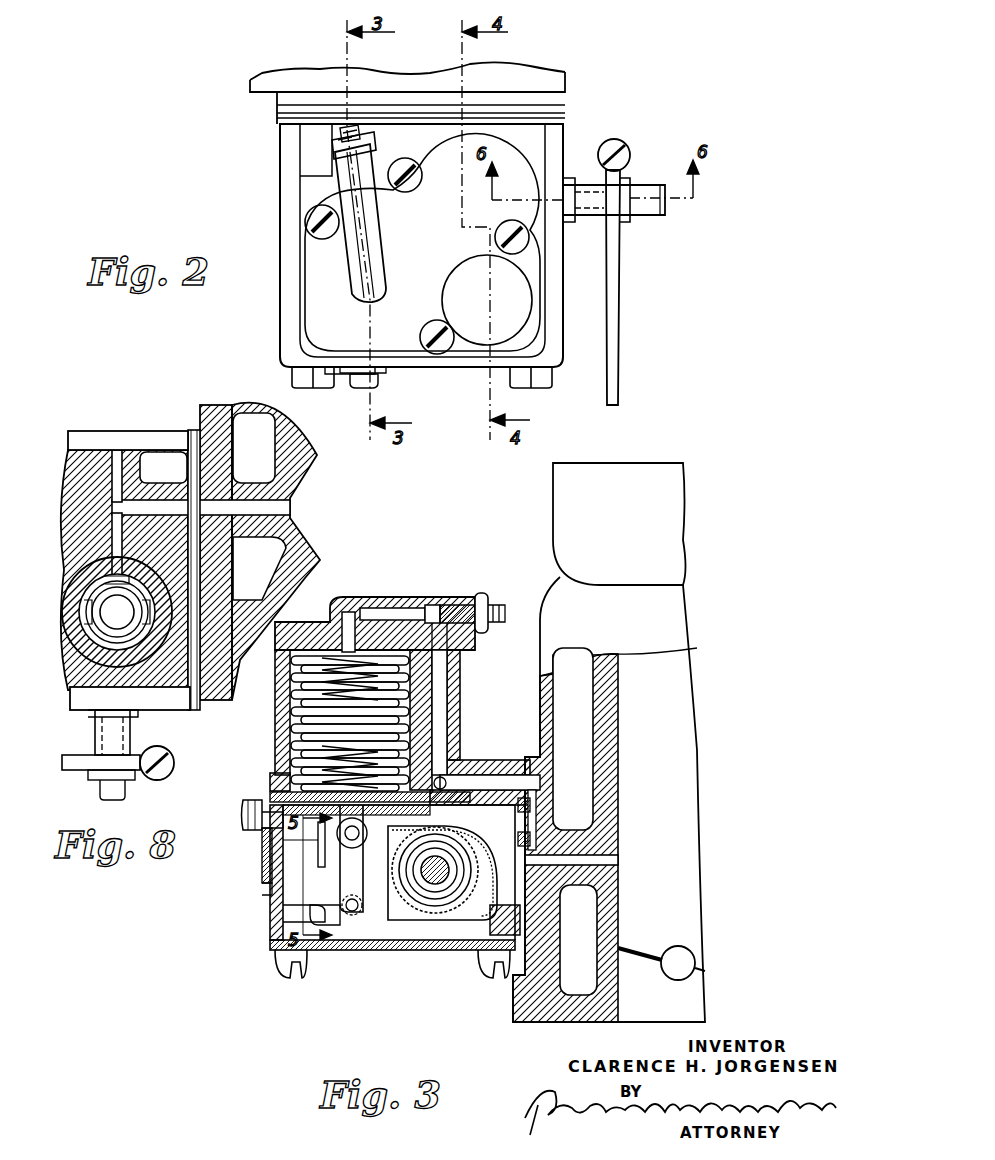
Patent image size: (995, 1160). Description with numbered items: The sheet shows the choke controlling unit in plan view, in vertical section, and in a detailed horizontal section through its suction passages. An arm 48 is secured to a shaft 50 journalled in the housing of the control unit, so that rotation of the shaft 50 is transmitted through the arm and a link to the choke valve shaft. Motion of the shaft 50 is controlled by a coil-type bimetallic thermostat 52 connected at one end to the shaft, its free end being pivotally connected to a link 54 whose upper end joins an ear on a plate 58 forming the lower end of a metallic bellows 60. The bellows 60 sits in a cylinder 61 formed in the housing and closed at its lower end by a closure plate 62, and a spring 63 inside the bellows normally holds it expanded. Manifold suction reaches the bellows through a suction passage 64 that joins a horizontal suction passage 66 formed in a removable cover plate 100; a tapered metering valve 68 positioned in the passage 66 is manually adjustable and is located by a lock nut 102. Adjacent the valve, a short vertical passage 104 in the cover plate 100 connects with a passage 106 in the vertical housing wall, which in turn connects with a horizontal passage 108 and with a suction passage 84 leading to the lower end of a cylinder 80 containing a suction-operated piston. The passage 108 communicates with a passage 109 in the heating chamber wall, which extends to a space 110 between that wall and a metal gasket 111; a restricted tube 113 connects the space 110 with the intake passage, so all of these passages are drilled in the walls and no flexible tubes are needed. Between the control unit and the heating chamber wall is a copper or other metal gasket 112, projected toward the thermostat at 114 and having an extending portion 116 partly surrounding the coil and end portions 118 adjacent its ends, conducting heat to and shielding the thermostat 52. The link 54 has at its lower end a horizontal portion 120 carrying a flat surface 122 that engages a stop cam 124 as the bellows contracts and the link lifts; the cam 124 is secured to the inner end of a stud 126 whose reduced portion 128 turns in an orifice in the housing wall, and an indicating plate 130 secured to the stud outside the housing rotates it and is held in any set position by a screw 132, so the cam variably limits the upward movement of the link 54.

In FIG. 2, the arm 48 is at (612, 285).
In FIG. 2, the shaft 50 is at (650, 208).
In FIG. 8, the shaft 50 is at (115, 742).
In FIG. 3, the shaft 50 is at (450, 870).
In FIG. 3, the bimetallic thermostat 52 is at (432, 922).
In FIG. 3, the link 54 is at (341, 880).
In FIG. 3, the plate 58 is at (392, 840).
In FIG. 3, the bellows 60 is at (300, 707).
In FIG. 3, the cylinder 61 is at (292, 677).
In FIG. 3, the closure plate 62 is at (282, 802).
In FIG. 3, the spring 63 is at (292, 790).
In FIG. 3, the suction passage 64 is at (336, 624).
In FIG. 8, the horizontal suction passage 66 is at (158, 512).
In FIG. 3, the horizontal suction passage 66 is at (350, 612).
In FIG. 2, the tapered metering valve 68 is at (346, 140).
In FIG. 3, the tapered metering valve 68 is at (415, 612).
In FIG. 8, the cylinder 80 is at (135, 648).
In FIG. 8, the suction passage 84 is at (120, 560).
In FIG. 2, the removable cover plate 100 is at (375, 232).
In FIG. 3, the removable cover plate 100 is at (388, 597).
In FIG. 2, the lock nut 102 is at (370, 148).
In FIG. 3, the lock nut 102 is at (482, 594).
In FIG. 3, the short vertical passage 104 is at (448, 640).
In FIG. 3, the passage 106 is at (440, 690).
In FIG. 3, the horizontal passage 108 is at (470, 775).
In FIG. 3, the passage 109 is at (520, 783).
In FIG. 3, the space 110 is at (552, 812).
In FIG. 3, the metal gasket 111 is at (530, 770).
In FIG. 3, the metal gasket 112 is at (528, 828).
In FIG. 3, the restricted tube 113 is at (590, 868).
In FIG. 3, the projected portion of gasket 114 is at (490, 920).
In FIG. 3, the extending portion 116 is at (405, 868).
In FIG. 3, the end portions 118 is at (398, 915).
In FIG. 3, the horizontal portion 120 is at (348, 918).
In FIG. 3, the flat surface 122 is at (300, 912).
In FIG. 3, the stop cam 124 is at (266, 872).
In FIG. 3, the stud 126 is at (318, 848).
In FIG. 3, the reduced portion 128 is at (264, 841).
In FIG. 2, the indicating plate 130 is at (386, 376).
In FIG. 3, the indicating plate 130 is at (270, 880).
In FIG. 2, the screw 132 is at (362, 388).
In FIG. 3, the screw 132 is at (252, 806).